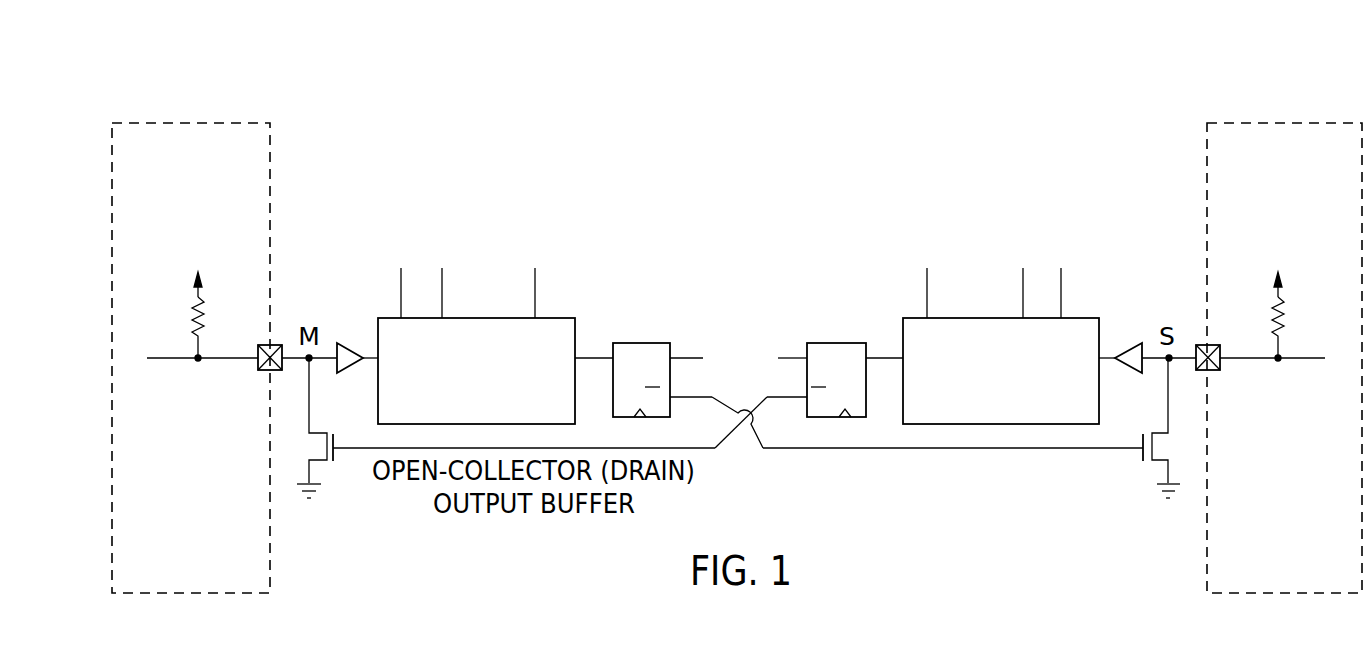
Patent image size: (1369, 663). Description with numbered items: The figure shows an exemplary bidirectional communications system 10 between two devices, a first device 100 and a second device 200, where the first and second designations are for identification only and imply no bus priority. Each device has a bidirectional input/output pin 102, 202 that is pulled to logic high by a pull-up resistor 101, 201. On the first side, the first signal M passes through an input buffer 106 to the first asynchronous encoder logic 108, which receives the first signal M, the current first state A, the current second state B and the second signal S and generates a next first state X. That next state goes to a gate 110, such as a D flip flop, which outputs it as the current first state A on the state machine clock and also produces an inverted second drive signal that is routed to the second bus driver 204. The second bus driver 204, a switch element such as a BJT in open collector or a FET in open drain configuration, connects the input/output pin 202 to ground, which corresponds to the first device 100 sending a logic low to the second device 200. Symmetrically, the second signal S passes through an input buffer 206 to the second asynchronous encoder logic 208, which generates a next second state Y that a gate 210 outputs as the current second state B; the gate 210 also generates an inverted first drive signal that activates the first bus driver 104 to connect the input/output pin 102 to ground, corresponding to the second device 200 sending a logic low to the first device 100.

The bidirectional communications system 10 is at (742, 176).
The first device 100 is at (221, 122).
The pull-up resistor 101 is at (198, 322).
The bidirectional input/output pin 102 is at (275, 347).
The first bus driver 104 is at (327, 462).
The input buffer 106 is at (352, 343).
The first asynchronous encoder logic 108 is at (572, 318).
The gate 110 is at (652, 343).
The second device 200 is at (1233, 122).
The pull-up resistor 201 is at (1280, 325).
The bidirectional input/output pin 202 is at (1200, 347).
The second bus driver 204 is at (1150, 462).
The input buffer 206 is at (1128, 345).
The second asynchronous encoder logic 208 is at (905, 318).
The gate 210 is at (828, 343).